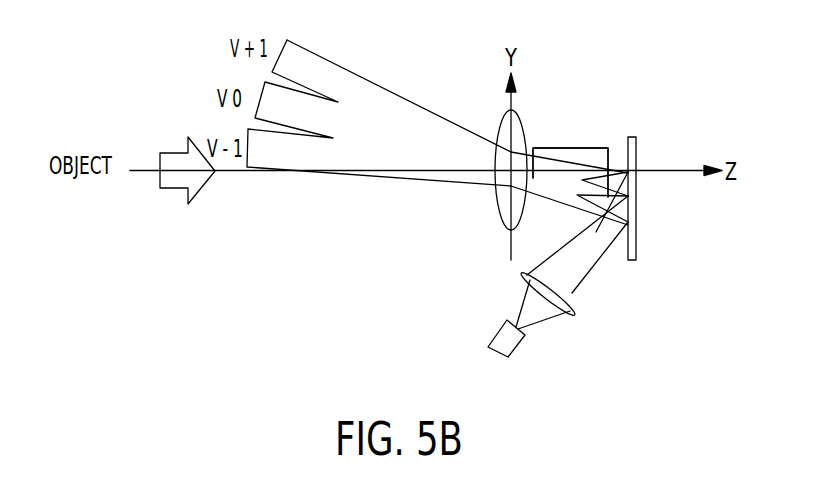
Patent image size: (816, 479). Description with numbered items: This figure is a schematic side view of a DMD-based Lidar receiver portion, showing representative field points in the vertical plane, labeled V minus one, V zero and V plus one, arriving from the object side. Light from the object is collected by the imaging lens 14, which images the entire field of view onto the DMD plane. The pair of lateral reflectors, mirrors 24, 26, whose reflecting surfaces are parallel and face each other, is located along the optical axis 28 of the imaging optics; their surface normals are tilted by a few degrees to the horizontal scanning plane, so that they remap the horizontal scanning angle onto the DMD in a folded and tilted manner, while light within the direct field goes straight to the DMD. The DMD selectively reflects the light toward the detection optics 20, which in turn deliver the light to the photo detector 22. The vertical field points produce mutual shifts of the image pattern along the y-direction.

The imaging lens 14 is at (500, 218).
The detection optics 20 is at (577, 313).
The photo detector 22 is at (520, 358).
The mirror 24 is at (598, 147).
The mirror 26 is at (598, 147).
The optical axis 28 is at (636, 241).